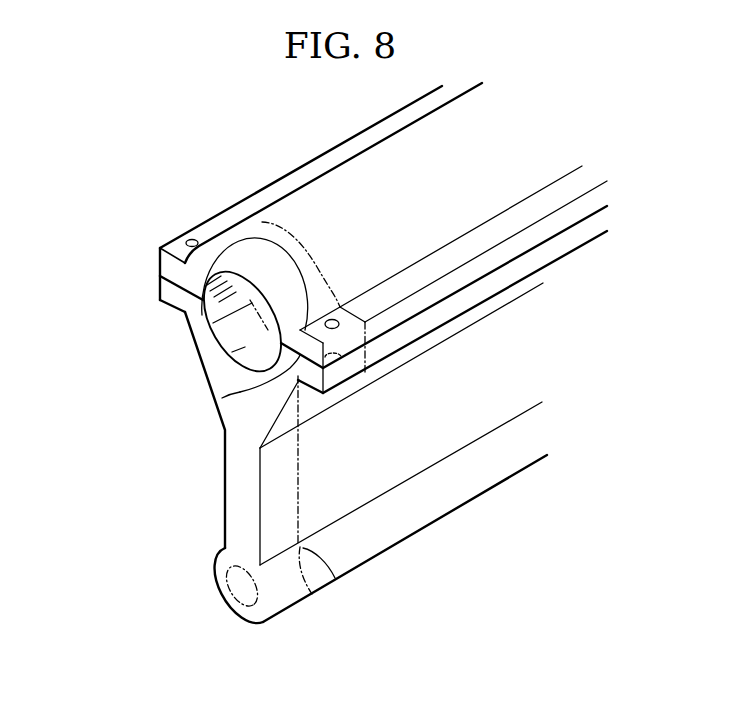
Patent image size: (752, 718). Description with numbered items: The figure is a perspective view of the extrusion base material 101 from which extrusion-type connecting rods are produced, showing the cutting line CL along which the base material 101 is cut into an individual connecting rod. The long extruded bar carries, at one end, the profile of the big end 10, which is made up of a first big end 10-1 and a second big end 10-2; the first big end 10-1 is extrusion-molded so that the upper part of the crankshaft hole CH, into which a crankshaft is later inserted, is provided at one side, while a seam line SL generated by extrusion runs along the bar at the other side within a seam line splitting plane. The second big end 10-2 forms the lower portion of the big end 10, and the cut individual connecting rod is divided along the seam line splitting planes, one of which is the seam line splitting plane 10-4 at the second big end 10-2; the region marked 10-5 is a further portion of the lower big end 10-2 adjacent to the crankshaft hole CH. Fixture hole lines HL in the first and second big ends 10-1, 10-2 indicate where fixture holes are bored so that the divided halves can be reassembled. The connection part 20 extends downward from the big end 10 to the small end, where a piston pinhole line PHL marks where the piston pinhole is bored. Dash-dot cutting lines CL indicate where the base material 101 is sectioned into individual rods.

The big end 10 is at (72, 252).
The first big end 10-1 is at (160, 261).
The second big end 10-2 is at (160, 292).
The seam line splitting plane 10-4 is at (340, 357).
The lower ring portion 10-5 is at (222, 398).
The connection part 20 is at (237, 494).
The extrusion base material 101 is at (458, 523).
The fixture hole line HL is at (191, 240).
The cutting line CL is at (280, 222).
The seam line SL is at (490, 273).
The crankshaft hole CH is at (237, 327).
The piston pinhole line PHL is at (238, 594).